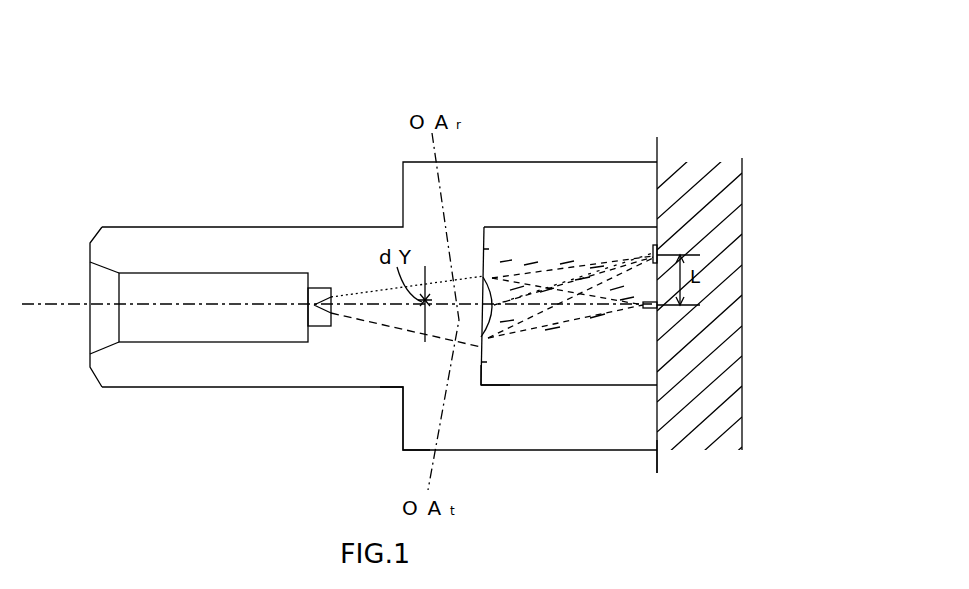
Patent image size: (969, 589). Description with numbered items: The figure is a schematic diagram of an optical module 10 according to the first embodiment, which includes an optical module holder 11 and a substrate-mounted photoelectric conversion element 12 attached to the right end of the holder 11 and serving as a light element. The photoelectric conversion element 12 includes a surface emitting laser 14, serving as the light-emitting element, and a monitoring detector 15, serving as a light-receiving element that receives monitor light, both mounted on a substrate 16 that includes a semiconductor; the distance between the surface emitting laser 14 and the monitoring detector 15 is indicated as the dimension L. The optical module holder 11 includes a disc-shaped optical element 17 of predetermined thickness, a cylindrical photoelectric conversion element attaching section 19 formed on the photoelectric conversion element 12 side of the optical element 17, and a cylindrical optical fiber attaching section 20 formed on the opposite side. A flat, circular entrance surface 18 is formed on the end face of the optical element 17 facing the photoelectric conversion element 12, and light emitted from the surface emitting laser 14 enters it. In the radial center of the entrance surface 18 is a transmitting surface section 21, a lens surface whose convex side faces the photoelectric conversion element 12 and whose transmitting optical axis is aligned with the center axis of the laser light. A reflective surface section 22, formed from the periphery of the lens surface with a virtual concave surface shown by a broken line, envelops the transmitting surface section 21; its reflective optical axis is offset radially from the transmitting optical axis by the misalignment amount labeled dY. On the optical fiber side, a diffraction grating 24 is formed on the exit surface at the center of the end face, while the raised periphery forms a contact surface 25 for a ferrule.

The optical module 10 is at (86, 97).
The optical module holder 11 is at (327, 227).
The photoelectric conversion element 12 is at (655, 152).
The surface emitting laser 14 is at (647, 312).
The monitoring detector 15 is at (653, 253).
The substrate 16 is at (655, 458).
The optical element 17 is at (393, 337).
The entrance surface 18 is at (482, 372).
The photoelectric conversion element attaching section 19 is at (548, 160).
The optical fiber attaching section 20 is at (192, 227).
The transmitting surface section 21 is at (490, 283).
The reflective surface section 22 is at (484, 345).
The diffraction grating 24 is at (322, 330).
The contact surface 25 is at (308, 333).